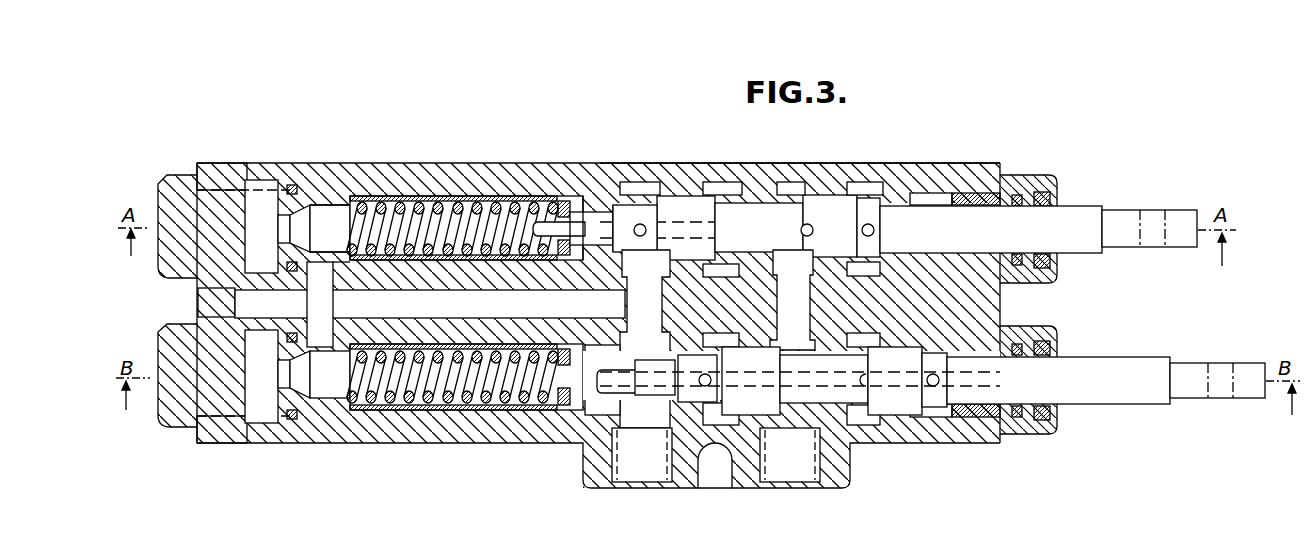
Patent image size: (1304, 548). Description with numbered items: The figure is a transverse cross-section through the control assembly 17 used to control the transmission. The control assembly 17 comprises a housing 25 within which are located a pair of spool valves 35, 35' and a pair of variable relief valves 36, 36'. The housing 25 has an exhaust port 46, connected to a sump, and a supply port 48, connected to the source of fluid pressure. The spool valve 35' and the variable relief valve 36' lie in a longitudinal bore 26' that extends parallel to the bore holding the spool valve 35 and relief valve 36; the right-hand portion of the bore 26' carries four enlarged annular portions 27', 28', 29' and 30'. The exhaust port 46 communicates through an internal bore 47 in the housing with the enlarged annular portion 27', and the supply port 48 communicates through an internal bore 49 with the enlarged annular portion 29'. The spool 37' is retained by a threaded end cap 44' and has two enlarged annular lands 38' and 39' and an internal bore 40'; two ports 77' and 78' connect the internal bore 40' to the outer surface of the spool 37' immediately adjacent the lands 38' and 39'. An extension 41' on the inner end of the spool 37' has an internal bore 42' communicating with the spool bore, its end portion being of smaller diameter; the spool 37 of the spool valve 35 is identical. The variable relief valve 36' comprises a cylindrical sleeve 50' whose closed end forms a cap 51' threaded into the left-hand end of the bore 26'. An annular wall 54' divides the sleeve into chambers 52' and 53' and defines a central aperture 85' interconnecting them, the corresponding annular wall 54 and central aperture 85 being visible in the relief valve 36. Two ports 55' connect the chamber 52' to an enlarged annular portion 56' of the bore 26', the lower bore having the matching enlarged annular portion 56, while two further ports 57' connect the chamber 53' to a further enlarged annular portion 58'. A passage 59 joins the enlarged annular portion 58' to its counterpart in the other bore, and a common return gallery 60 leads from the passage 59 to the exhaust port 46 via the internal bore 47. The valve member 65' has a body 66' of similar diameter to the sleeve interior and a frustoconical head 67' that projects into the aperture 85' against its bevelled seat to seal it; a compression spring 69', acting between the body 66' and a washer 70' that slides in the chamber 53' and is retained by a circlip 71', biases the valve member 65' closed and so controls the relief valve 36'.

The control assembly 17 is at (645, 148).
The housing 25 is at (693, 183).
The bore 26' is at (627, 188).
The enlarged annular portion 27' is at (654, 154).
The enlarged annular portion 28' is at (761, 156).
The enlarged annular portion 29' is at (830, 187).
The enlarged annular portion 30' is at (923, 272).
The spool valve 35 is at (598, 472).
The spool valve 35' is at (800, 133).
The variable relief valve 36 is at (465, 418).
The variable relief valve 36' is at (452, 179).
The spool 37 is at (924, 400).
The spool 37' is at (1038, 201).
The enlarged annular land 38' is at (711, 277).
The enlarged annular land 39' is at (854, 194).
The internal bore 40' is at (759, 191).
The extension 41' is at (593, 256).
The internal bore 42' is at (575, 261).
The threaded end cap 44' is at (1028, 281).
The exhaust port 46 is at (643, 470).
The internal bore 47 is at (653, 316).
The supply port 48 is at (783, 470).
The internal bore 49 is at (805, 316).
The cylindrical sleeve 50' is at (466, 174).
The cap 51' is at (169, 276).
The chamber 52' is at (250, 148).
The chamber 53' is at (453, 190).
The annular wall 54 is at (254, 412).
The annular wall 54' is at (292, 186).
The ports 55' is at (243, 266).
The enlarged annular portion 56 is at (296, 407).
The enlarged annular portion 56' is at (264, 171).
The ports 57' is at (325, 222).
The further enlarged annular portion 58' is at (319, 199).
The passage 59 is at (330, 316).
The common return gallery 60 is at (458, 316).
The valve member 65' is at (357, 288).
The body 66' is at (332, 240).
The frustoconical head 67' is at (329, 217).
The compression spring 69' is at (453, 164).
The washer 70' is at (552, 190).
The circlip 71' is at (591, 174).
The port 77' is at (671, 216).
The port 78' is at (866, 228).
The central aperture 85 is at (263, 376).
The central aperture 85' is at (317, 173).